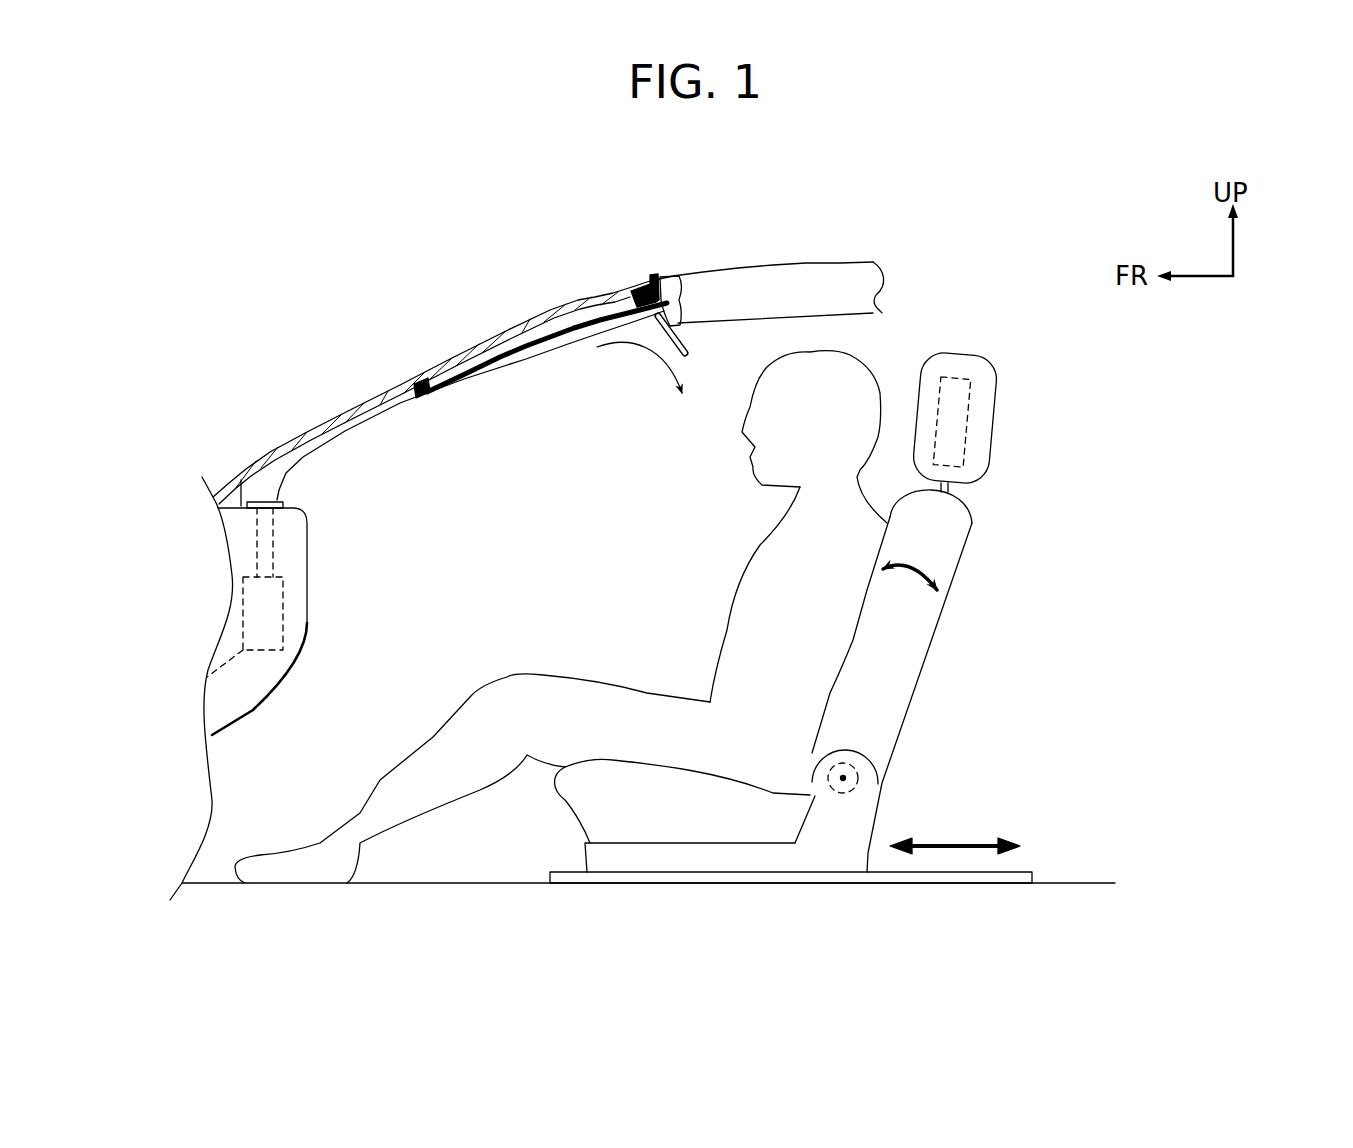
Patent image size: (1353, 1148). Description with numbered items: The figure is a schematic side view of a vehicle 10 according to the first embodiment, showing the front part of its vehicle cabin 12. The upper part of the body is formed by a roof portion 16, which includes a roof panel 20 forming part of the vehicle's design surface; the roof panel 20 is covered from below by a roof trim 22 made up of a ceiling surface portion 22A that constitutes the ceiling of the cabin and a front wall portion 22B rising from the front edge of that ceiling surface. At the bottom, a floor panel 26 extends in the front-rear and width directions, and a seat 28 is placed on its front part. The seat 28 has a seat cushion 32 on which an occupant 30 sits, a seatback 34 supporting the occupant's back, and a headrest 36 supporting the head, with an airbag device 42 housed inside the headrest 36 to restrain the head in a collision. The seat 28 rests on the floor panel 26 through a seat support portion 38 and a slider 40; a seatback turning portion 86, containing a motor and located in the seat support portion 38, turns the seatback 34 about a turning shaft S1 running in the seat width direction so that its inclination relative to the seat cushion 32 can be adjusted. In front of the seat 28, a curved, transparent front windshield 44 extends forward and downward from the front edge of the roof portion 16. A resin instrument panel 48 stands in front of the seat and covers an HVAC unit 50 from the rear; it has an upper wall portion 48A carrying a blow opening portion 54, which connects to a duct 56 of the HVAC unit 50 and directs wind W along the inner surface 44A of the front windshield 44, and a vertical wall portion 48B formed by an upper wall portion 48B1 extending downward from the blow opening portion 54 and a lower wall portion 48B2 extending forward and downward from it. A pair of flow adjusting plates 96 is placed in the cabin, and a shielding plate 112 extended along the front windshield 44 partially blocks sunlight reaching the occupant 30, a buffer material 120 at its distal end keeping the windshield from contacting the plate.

The vehicle 10 is at (835, 201).
The vehicle cabin 12 is at (906, 340).
The roof portion 16 is at (804, 258).
The roof panel 20 is at (713, 269).
The roof trim 22 is at (697, 323).
The ceiling surface portion 22A is at (722, 324).
The front wall portion 22B is at (634, 297).
The floor panel 26 is at (1065, 882).
The seat 28 is at (779, 645).
The occupant 30 is at (747, 583).
The seat cushion 32 is at (577, 810).
The seatback 34 is at (947, 552).
The headrest 36 is at (992, 382).
The seat support portion 38 is at (858, 818).
The slider 40 is at (977, 877).
The airbag device 42 is at (967, 427).
The front windshield 44 is at (543, 383).
The inner surface 44A is at (370, 409).
The instrument panel 48 is at (295, 603).
The upper wall portion 48A is at (241, 480).
The vertical wall portion 48B is at (324, 653).
The upper wall portion 48B1 is at (309, 540).
The lower wall portion 48B2 is at (257, 712).
The HVAC unit 50 is at (271, 656).
The blow opening portion 54 is at (270, 504).
The duct 56 is at (253, 542).
The seatback turning portion 86 is at (860, 772).
The flow adjusting plates 96 is at (685, 355).
The shielding plate 112 is at (532, 343).
The buffer material 120 is at (421, 384).
The wind W is at (503, 370).
The turning shaft S1 is at (843, 778).